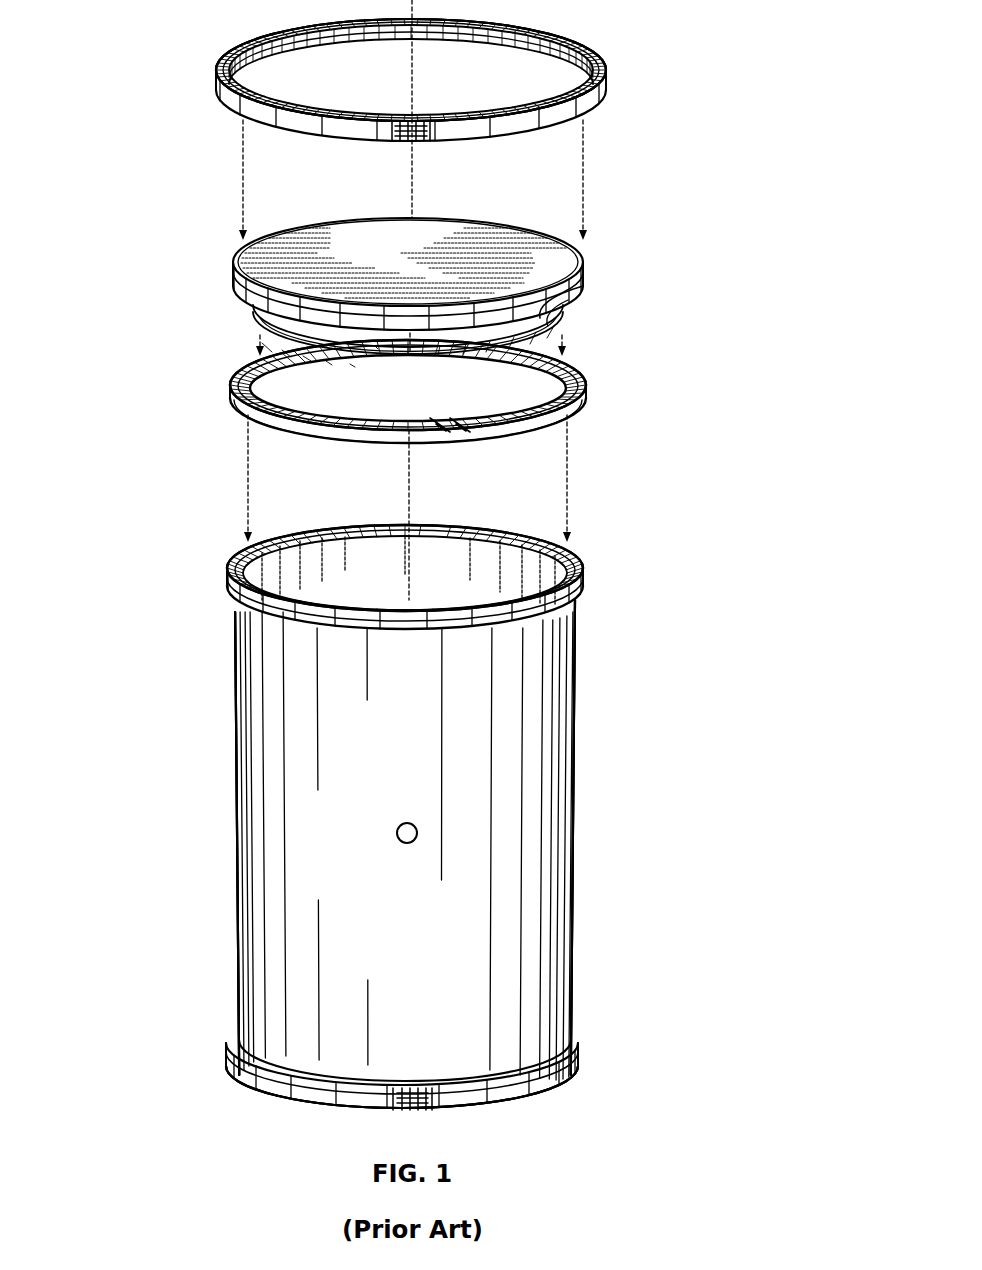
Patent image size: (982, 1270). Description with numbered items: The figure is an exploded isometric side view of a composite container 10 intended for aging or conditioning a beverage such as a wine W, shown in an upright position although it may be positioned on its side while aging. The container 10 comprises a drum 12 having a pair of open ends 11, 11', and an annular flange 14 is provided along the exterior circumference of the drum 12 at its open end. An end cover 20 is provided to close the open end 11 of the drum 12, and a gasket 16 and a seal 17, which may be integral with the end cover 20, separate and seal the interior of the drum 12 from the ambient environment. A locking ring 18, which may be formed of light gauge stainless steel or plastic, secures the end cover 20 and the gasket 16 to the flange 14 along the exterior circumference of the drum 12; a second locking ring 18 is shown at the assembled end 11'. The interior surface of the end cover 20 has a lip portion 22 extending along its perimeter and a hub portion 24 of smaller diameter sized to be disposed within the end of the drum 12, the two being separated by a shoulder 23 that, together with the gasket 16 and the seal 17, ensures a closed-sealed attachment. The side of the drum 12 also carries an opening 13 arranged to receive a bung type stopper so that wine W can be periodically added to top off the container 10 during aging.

The container 10 is at (212, 630).
The open end 11 is at (318, 258).
The open end 11' is at (508, 851).
The drum 12 is at (575, 752).
The opening 13 is at (395, 833).
The annular flange 14 is at (580, 577).
The gasket 16 is at (587, 387).
The seal 17 is at (290, 316).
The locking ring 18 is at (605, 82).
The end cover 20 is at (589, 274).
The lip portion 22 is at (237, 282).
The shoulder 23 is at (553, 322).
The hub portion 24 is at (557, 308).
The wine W is at (380, 584).